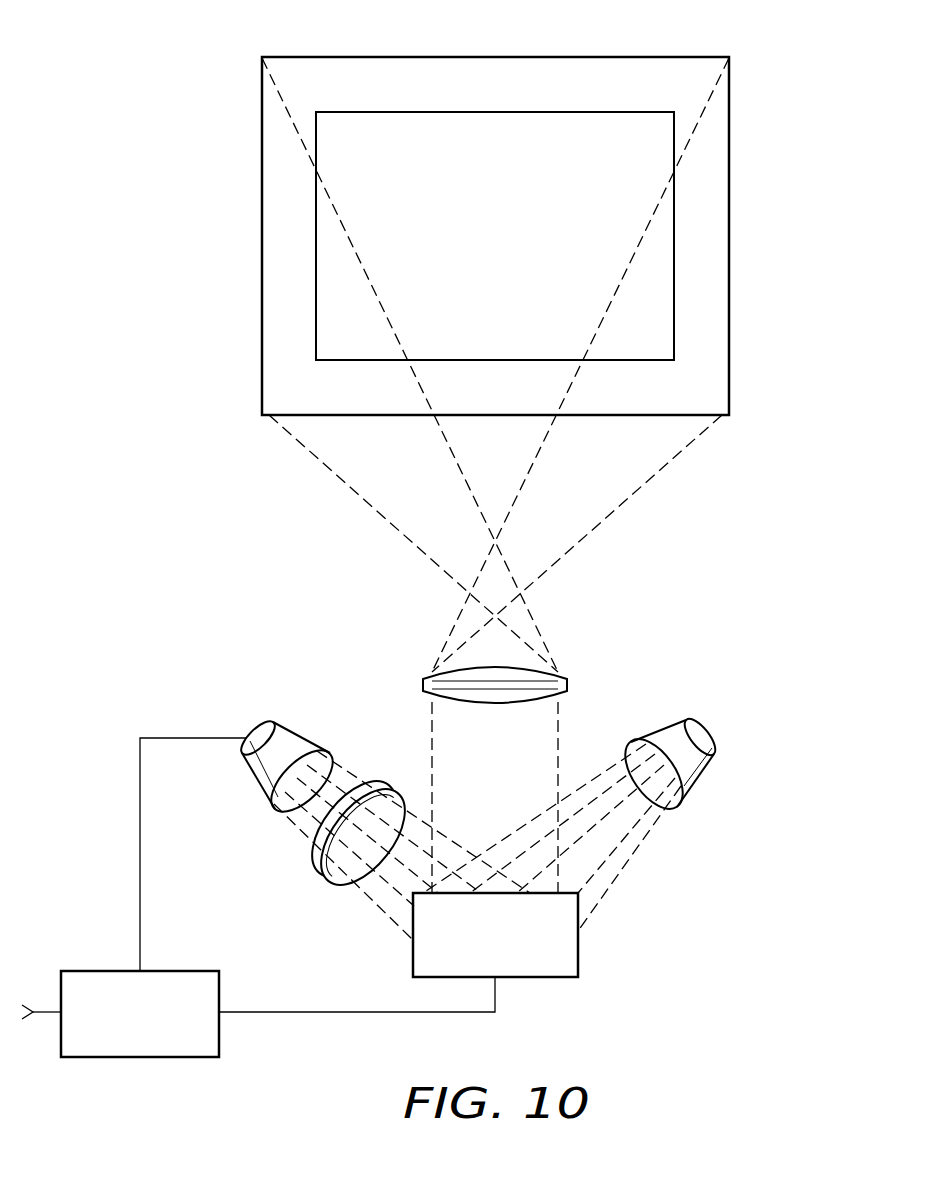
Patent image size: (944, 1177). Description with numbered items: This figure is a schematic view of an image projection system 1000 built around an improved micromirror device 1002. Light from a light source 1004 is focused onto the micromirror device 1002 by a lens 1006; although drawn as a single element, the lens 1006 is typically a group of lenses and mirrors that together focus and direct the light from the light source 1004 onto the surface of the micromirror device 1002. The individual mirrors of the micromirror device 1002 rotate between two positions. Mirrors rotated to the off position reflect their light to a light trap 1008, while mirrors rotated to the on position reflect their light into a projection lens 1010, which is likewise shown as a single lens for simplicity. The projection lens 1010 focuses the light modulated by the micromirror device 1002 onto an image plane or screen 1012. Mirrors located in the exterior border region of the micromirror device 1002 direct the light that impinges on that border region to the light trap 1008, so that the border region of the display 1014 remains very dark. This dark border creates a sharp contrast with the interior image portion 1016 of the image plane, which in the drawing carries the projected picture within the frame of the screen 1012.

The image projection system 1000 is at (776, 117).
The micromirror device 1002 is at (525, 949).
The light source 1004 is at (292, 742).
The lens 1006 is at (325, 877).
The light trap 1008 is at (695, 735).
The projection lens 1010 is at (567, 686).
The screen 1012 is at (262, 226).
The display 1014 is at (712, 294).
The interior image portion 1016 is at (581, 130).